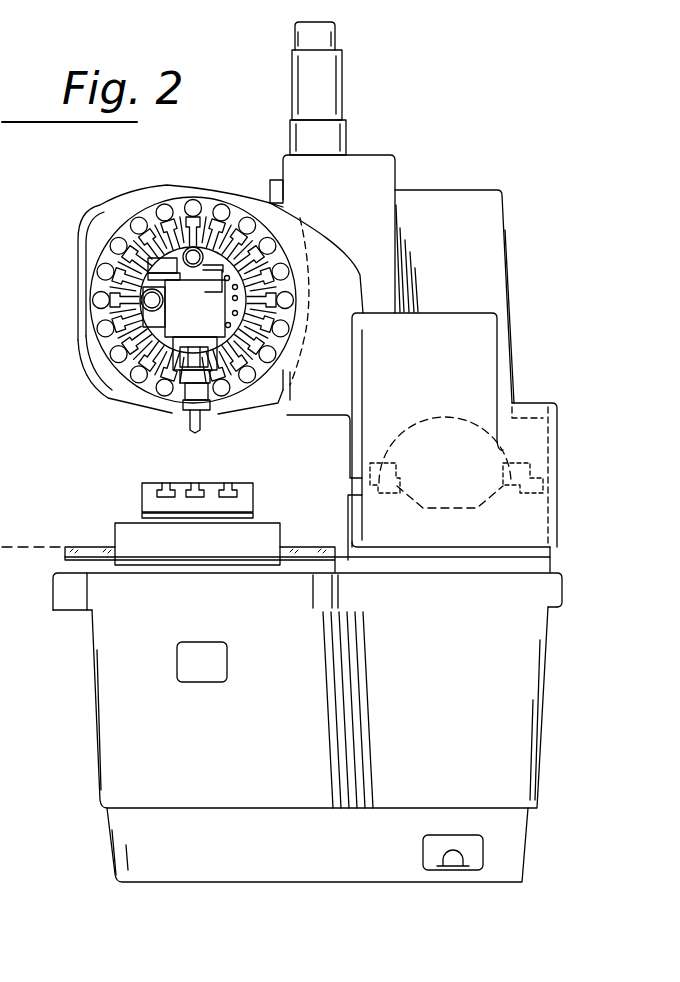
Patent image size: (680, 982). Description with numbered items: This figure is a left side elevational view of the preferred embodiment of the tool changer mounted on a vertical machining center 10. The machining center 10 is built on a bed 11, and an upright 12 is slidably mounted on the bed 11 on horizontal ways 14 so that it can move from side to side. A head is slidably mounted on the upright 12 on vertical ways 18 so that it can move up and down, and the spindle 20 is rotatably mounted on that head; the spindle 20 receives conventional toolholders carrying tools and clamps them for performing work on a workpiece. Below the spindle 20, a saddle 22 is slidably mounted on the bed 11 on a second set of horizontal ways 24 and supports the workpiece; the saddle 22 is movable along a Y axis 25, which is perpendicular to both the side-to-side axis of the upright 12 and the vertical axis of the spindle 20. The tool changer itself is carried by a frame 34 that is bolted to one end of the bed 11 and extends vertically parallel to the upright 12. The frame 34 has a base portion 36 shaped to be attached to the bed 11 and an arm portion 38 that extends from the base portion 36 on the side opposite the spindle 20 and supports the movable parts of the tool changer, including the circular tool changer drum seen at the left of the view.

The vertical machining center 10 is at (577, 443).
The bed 11 is at (522, 684).
The upright 12 is at (483, 226).
The horizontal ways 14 is at (456, 458).
The vertical ways 18 is at (267, 187).
The spindle 20 is at (190, 385).
The saddle 22 is at (270, 527).
The horizontal ways 24 is at (308, 544).
The Y axis 25 is at (40, 547).
The frame 34 is at (440, 351).
The base portion 36 is at (480, 376).
The arm portion 38 is at (315, 240).